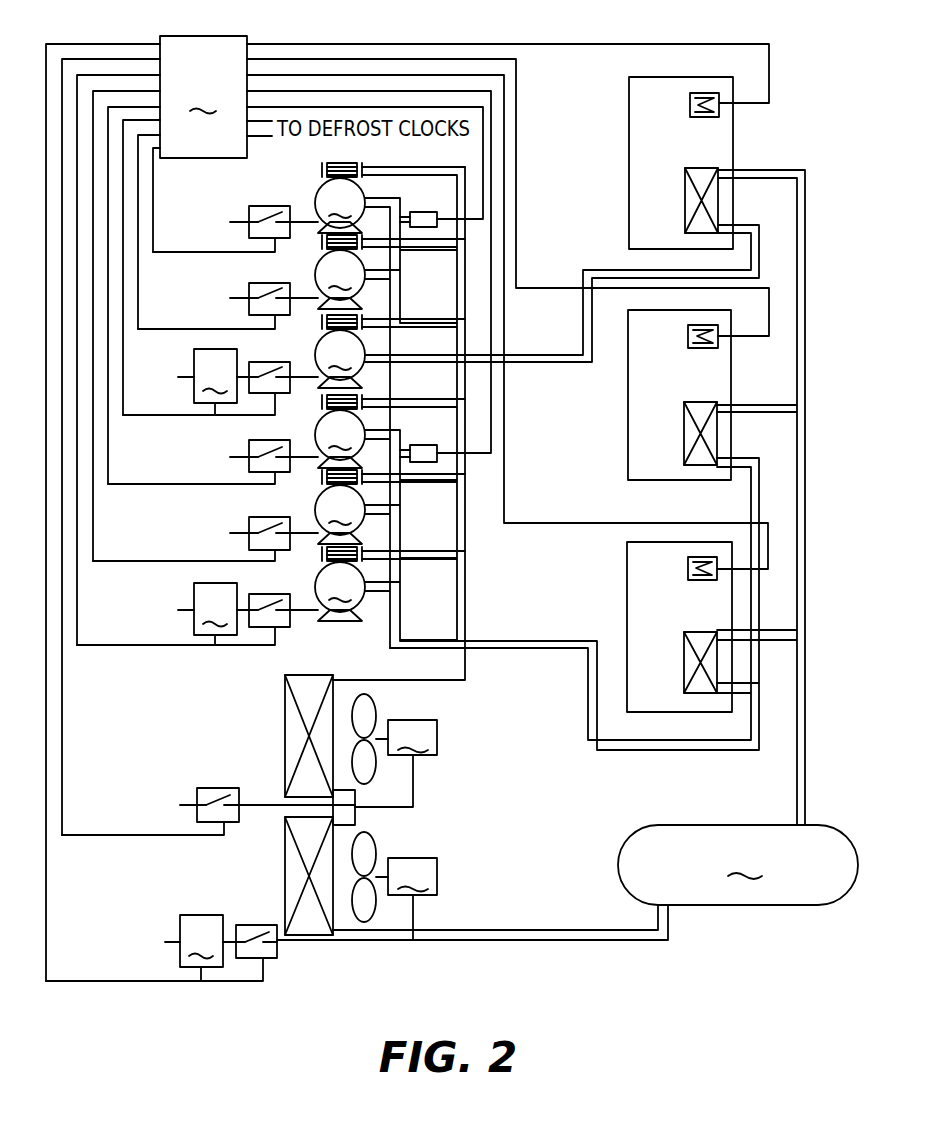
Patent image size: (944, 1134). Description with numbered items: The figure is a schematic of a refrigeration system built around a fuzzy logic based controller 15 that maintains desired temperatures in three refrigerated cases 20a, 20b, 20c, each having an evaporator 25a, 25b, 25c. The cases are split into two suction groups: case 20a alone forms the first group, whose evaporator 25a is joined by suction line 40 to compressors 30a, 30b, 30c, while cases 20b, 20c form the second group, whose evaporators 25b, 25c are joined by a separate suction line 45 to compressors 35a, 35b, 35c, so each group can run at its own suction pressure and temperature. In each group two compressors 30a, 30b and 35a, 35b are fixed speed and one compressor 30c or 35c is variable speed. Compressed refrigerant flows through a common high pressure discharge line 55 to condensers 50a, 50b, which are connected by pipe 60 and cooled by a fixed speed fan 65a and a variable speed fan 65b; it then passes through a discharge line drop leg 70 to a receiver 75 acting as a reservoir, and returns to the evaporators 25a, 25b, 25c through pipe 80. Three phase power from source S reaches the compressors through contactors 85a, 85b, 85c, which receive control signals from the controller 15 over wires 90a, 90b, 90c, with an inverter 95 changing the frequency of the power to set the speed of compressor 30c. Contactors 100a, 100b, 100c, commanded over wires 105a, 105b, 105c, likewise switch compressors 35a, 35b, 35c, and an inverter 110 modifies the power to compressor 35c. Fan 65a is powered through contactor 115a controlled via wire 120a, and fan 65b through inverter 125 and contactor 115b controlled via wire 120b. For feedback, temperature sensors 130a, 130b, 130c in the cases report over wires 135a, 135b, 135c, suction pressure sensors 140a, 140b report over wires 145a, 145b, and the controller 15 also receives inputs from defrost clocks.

The fuzzy logic based controller 15 is at (203, 97).
The refrigerated case 20a is at (733, 137).
The refrigerated case 20b is at (732, 370).
The refrigerated case 20c is at (627, 567).
The evaporator 25a is at (685, 212).
The evaporator 25b is at (684, 445).
The evaporator 25c is at (684, 672).
The fixed speed compressor 30a is at (340, 198).
The fixed speed compressor 30b is at (340, 272).
The variable speed compressor 30c is at (340, 351).
The fixed speed compressor 35a is at (340, 431).
The fixed speed compressor 35b is at (340, 507).
The variable speed compressor 35c is at (340, 584).
The suction line 40 is at (400, 302).
The suction line 45 is at (530, 641).
The condenser 50a is at (283, 717).
The condenser 50b is at (283, 863).
The common high pressure discharge line 55 is at (467, 598).
The pipe 60 is at (355, 812).
The fixed speed fan 65a is at (394, 750).
The variable speed fan 65b is at (394, 886).
The discharge line drop leg 70 is at (580, 933).
The receiver 75 is at (738, 865).
The pipe 80 is at (795, 785).
The contactor 85a is at (277, 206).
The contactor 85b is at (277, 283).
The contactor 85c is at (262, 362).
The wire 90a is at (153, 223).
The wire 90b is at (138, 310).
The wire 90c is at (123, 383).
The inverter 95 is at (198, 376).
The contactor 100a is at (277, 440).
The contactor 100b is at (277, 517).
The contactor 100c is at (262, 594).
The wire 105a is at (108, 468).
The wire 105b is at (93, 532).
The wire 105c is at (77, 622).
The inverter 110 is at (198, 609).
The contactor 115a is at (212, 788).
The contactor 115b is at (252, 925).
The wire 120a is at (62, 742).
The wire 120b is at (47, 915).
The inverter 125 is at (185, 941).
The temperature sensor 130a is at (688, 105).
The temperature sensor 130b is at (688, 336).
The temperature sensor 130c is at (688, 570).
The wire 135a is at (602, 47).
The wire 135b is at (516, 112).
The wire 135c is at (504, 135).
The suction pressure sensor 140a is at (424, 212).
The suction pressure sensor 140b is at (424, 445).
The wire 145a is at (491, 162).
The wire 145b is at (483, 183).